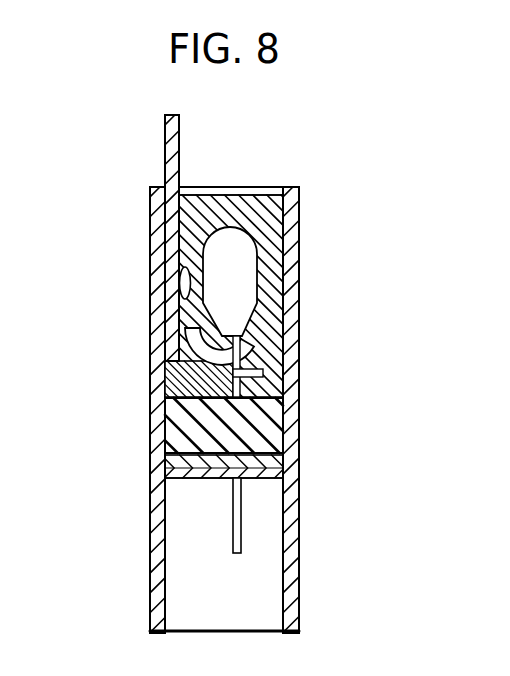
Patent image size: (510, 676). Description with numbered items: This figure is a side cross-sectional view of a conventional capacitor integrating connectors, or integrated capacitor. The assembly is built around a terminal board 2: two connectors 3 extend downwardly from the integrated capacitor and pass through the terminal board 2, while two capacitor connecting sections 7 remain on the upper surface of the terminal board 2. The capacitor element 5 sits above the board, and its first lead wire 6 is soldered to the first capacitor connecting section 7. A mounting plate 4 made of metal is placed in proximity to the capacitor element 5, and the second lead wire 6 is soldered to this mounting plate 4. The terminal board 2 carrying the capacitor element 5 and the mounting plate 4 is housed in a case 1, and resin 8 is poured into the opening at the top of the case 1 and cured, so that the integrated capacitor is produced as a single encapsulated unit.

The case 1 is at (290, 390).
The terminal board 2 is at (243, 425).
The connectors 3 is at (233, 515).
The mounting plate 4 is at (173, 162).
The capacitor element 5 is at (232, 260).
The lead wire 6 is at (170, 362).
The capacitor connecting section 7 is at (190, 284).
The resin 8 is at (272, 212).